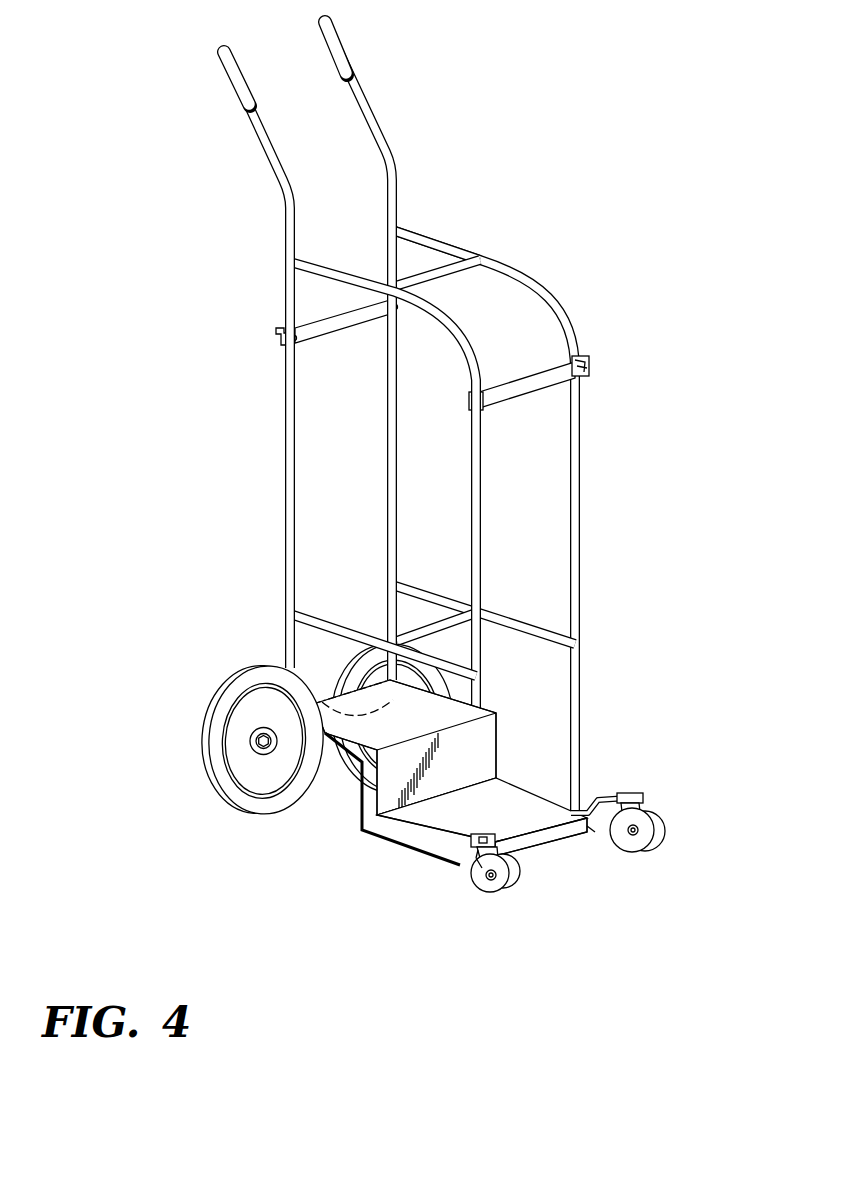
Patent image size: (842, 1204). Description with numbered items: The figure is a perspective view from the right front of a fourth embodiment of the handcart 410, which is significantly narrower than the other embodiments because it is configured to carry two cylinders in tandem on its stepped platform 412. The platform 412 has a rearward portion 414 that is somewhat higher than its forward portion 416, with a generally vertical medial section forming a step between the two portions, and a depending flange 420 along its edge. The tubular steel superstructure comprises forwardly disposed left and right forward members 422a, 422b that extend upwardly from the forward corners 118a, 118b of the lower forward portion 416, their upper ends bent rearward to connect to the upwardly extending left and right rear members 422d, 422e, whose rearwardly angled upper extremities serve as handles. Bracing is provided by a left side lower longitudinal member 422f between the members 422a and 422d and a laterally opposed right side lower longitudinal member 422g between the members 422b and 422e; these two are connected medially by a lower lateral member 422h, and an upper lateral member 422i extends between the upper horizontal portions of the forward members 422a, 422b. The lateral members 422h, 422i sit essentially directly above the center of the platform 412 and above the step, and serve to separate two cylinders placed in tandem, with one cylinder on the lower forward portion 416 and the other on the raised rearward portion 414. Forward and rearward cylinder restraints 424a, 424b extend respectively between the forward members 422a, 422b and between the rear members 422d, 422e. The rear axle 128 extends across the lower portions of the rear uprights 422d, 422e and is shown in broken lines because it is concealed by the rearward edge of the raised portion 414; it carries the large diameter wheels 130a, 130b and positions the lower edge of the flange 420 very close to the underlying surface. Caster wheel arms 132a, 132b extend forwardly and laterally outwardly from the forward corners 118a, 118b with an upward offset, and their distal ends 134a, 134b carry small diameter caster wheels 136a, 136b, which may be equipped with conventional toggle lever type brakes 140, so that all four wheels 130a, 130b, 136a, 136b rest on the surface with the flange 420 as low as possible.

The handcart 410 is at (428, 509).
The stepped platform 412 is at (498, 718).
The rearward portion 414 is at (367, 728).
The forward portion 416 is at (508, 802).
The depending flange 420 is at (386, 845).
The left forward member 422a is at (581, 537).
The right forward member 422b is at (482, 557).
The left rear member 422d is at (398, 526).
The right rear member 422e is at (286, 476).
The left side lower longitudinal member 422f is at (527, 620).
The right side lower longitudinal member 422g is at (324, 620).
The lower lateral member 422h is at (444, 603).
The upper lateral member 422i is at (444, 252).
The forward cylinder restraint 424a is at (535, 393).
The rearward cylinder restraint 424b is at (322, 337).
The rear axle 128 is at (374, 714).
The large diameter wheel 130a is at (345, 658).
The large diameter wheel 130b is at (210, 752).
The caster wheel arm 132a is at (600, 798).
The caster wheel arm 132b is at (468, 847).
The distal end 134a is at (672, 824).
The distal end 134b is at (516, 910).
The caster wheel 136a is at (660, 836).
The caster wheel 136b is at (508, 866).
The toggle lever type brake 140 is at (504, 897).
The platform forward corner 118a is at (598, 833).
The platform forward corner 118b is at (478, 878).